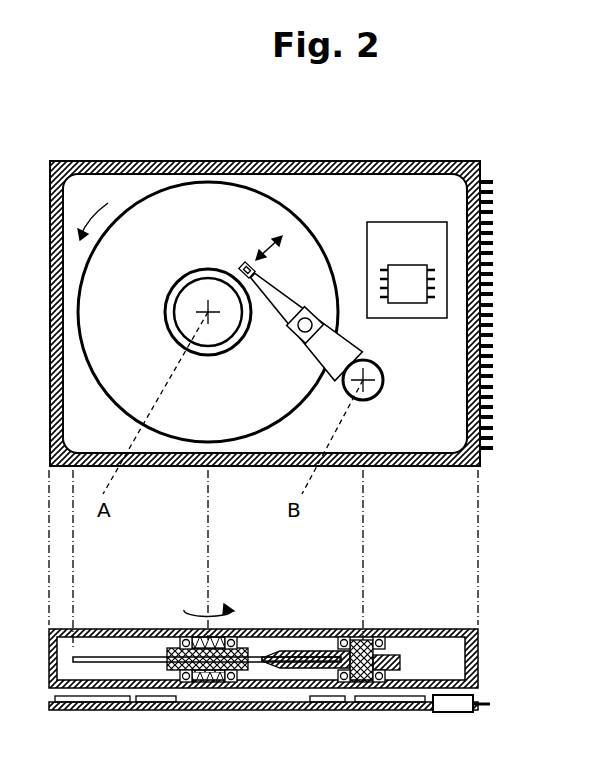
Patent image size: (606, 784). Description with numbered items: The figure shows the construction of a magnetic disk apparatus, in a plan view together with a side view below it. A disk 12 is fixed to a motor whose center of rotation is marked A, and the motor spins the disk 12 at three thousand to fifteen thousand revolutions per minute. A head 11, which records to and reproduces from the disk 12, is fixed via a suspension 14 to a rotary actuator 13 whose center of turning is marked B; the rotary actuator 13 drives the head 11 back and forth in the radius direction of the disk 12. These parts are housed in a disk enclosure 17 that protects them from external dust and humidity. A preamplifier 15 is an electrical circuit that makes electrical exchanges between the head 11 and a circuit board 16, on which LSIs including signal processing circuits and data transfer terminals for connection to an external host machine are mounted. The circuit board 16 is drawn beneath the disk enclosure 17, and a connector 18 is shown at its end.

The head 11 is at (245, 262).
The disk 12 is at (185, 196).
The rotary actuator 13 is at (385, 373).
The suspension 14 is at (274, 292).
The preamplifier 15 is at (401, 276).
The circuit board 16 is at (220, 712).
The disk enclosure 17 is at (357, 162).
The connector 18 is at (455, 712).